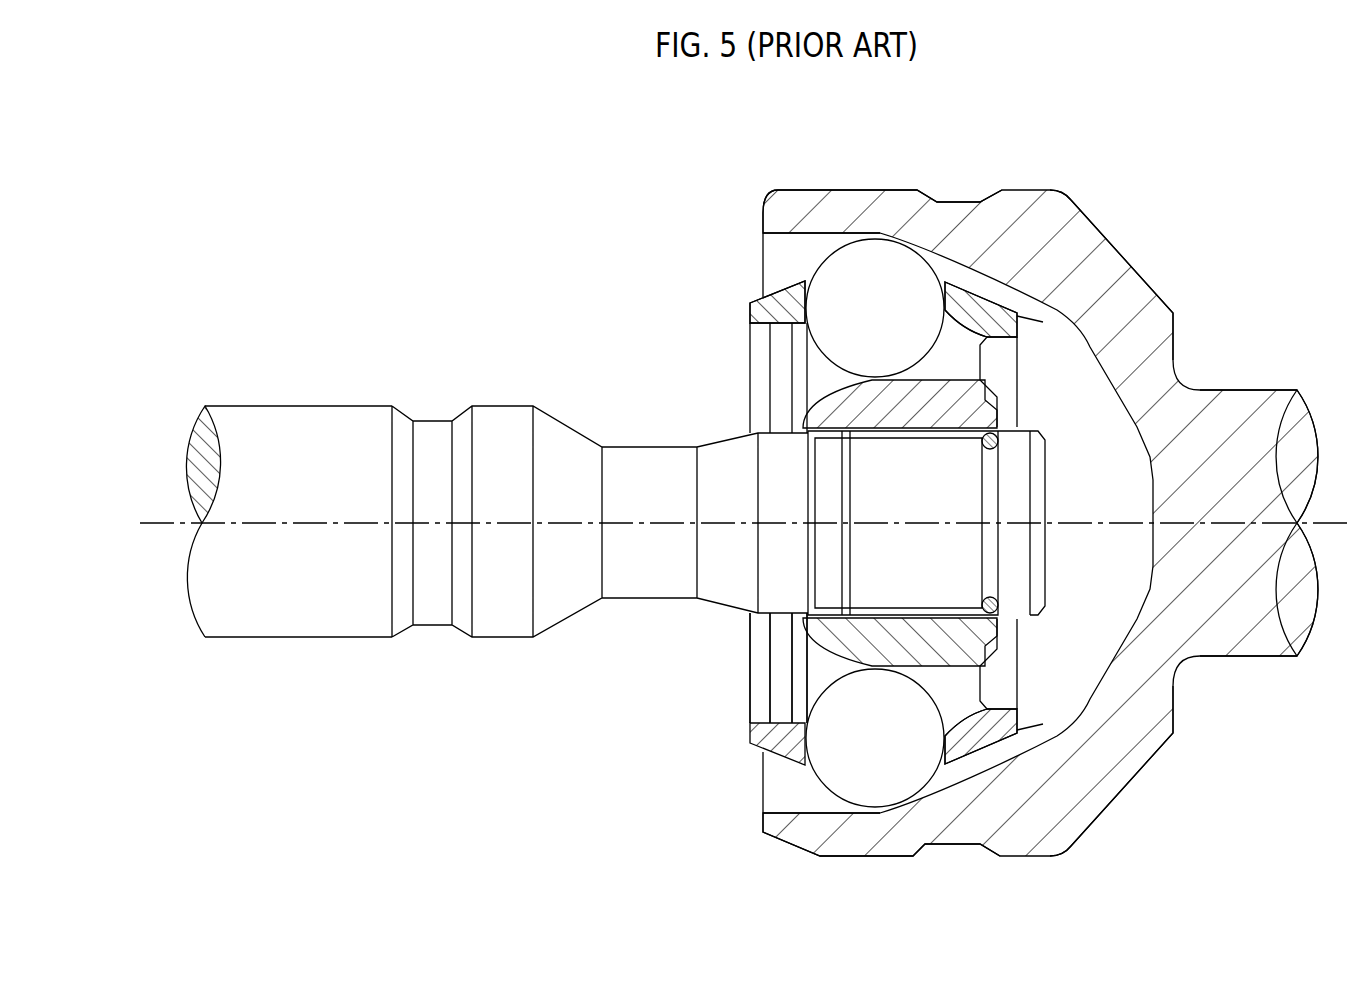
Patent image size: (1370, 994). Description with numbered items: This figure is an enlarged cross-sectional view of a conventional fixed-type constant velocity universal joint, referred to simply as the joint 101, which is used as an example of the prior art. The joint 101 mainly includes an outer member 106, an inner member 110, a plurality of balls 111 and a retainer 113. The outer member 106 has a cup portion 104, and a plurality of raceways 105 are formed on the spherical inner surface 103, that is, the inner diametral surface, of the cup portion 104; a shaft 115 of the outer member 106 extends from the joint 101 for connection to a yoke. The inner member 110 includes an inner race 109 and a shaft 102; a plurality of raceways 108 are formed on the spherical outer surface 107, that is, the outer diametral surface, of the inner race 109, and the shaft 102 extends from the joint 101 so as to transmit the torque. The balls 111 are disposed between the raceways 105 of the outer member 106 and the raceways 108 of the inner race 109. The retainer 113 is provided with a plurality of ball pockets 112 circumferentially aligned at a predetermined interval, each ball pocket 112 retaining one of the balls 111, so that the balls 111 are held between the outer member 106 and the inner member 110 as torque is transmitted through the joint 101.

The joint 101 is at (705, 188).
The shaft 102 is at (302, 640).
The spherical inner surface 103 is at (822, 752).
The cup portion 104 is at (1122, 750).
The raceways 105 is at (947, 262).
The outer member 106 is at (1138, 272).
The spherical outer surface 107 is at (948, 690).
The raceways 108 is at (825, 397).
The inner race 109 is at (822, 651).
The inner member 110 is at (526, 405).
The balls 111 is at (880, 268).
The ball pockets 112 is at (812, 305).
The retainer 113 is at (993, 289).
The shaft 115 is at (1258, 390).